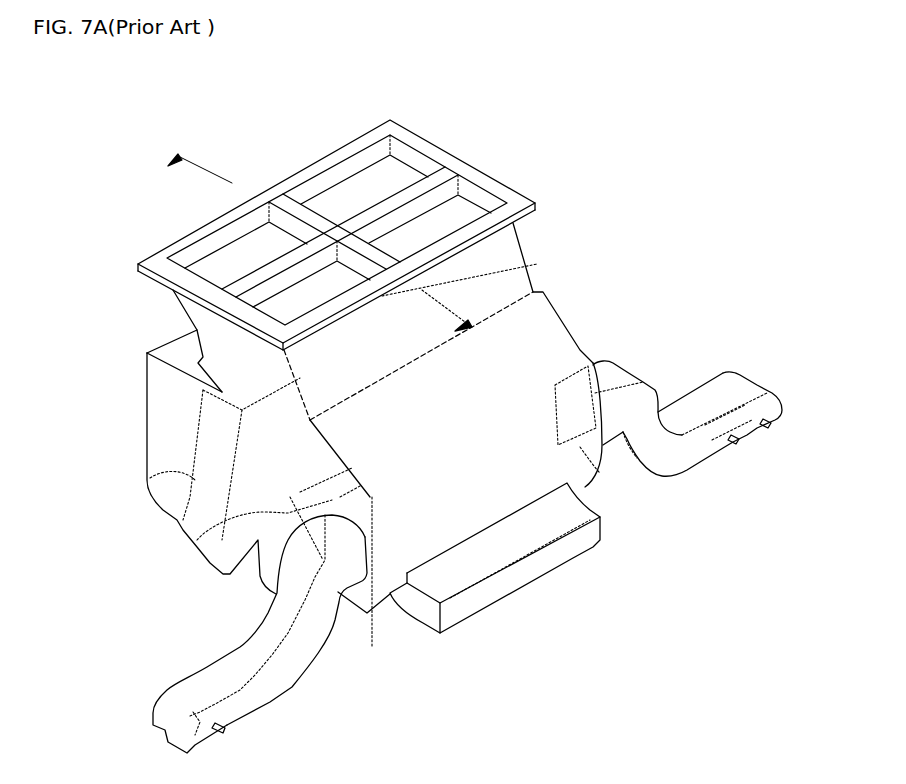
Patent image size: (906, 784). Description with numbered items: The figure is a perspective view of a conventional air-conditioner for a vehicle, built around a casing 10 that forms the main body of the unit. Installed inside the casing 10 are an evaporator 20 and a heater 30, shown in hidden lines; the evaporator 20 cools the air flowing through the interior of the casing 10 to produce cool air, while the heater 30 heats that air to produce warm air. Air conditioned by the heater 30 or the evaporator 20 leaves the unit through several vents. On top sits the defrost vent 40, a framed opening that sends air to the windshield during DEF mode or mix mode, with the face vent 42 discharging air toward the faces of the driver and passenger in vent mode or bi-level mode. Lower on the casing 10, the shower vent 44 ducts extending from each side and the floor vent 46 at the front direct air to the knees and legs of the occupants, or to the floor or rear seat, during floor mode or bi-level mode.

The casing 10 is at (157, 405).
The evaporator 20 is at (190, 474).
The heater 30 is at (197, 540).
The defrost vent 40 is at (330, 203).
The face vent 42 is at (335, 292).
The shower vent 44 is at (583, 478).
The floor vent 46 is at (540, 565).